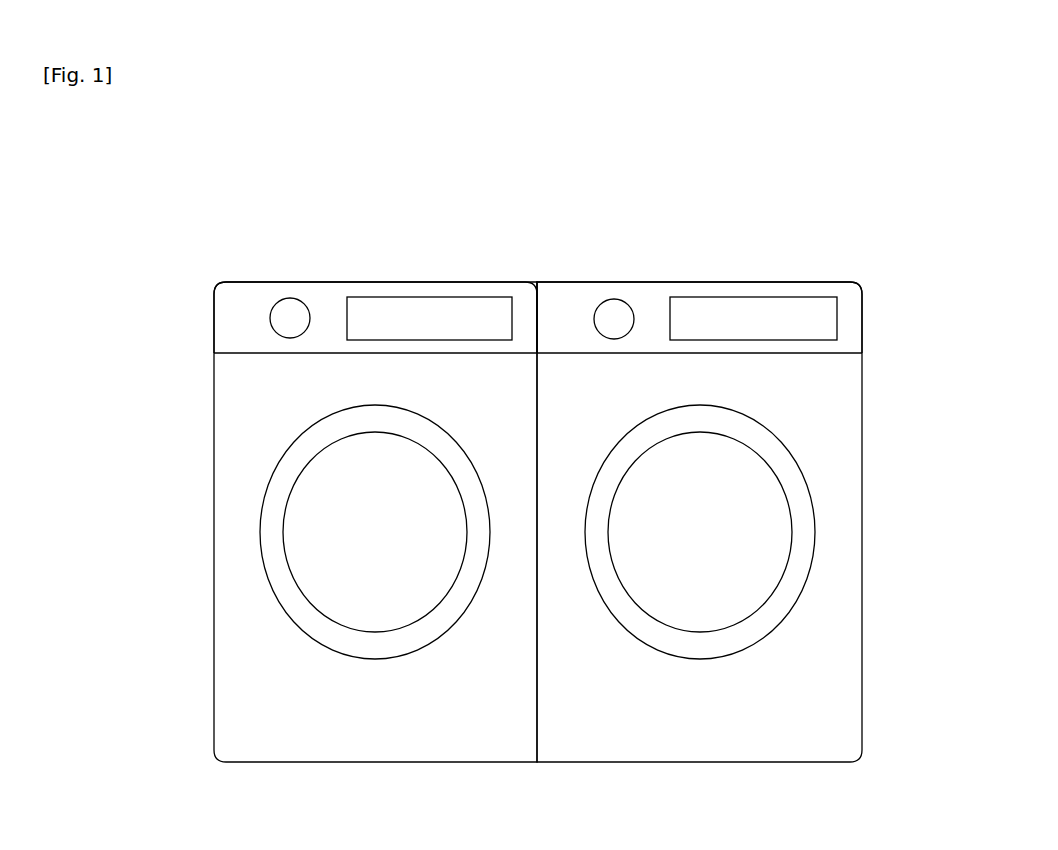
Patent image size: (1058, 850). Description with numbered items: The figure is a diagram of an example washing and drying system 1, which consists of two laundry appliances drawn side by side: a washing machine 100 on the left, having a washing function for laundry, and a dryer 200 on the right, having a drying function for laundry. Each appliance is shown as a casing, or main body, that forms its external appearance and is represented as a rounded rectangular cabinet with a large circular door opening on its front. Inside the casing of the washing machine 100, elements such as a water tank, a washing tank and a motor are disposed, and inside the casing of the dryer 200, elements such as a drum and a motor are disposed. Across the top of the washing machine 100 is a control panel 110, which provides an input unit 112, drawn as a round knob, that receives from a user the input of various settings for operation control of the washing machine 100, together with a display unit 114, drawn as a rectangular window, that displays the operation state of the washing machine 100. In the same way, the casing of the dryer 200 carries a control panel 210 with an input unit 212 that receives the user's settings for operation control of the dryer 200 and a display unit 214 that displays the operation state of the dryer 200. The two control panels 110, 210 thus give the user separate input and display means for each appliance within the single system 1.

The washing and drying system 1 is at (219, 170).
The washing machine 100 is at (313, 270).
The control panel 110 is at (233, 327).
The input unit 112 is at (290, 316).
The display unit 114 is at (413, 313).
The dryer 200 is at (635, 270).
The control panel 210 is at (846, 315).
The input unit 212 is at (613, 317).
The display unit 214 is at (737, 313).